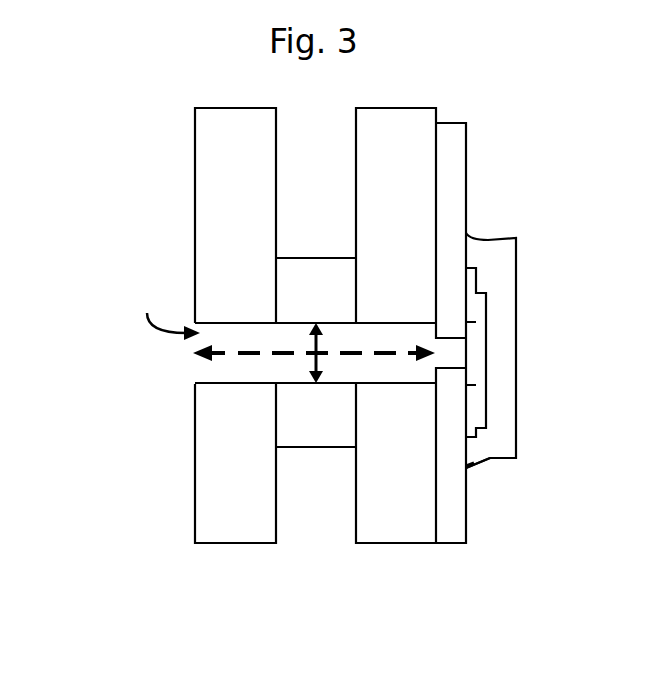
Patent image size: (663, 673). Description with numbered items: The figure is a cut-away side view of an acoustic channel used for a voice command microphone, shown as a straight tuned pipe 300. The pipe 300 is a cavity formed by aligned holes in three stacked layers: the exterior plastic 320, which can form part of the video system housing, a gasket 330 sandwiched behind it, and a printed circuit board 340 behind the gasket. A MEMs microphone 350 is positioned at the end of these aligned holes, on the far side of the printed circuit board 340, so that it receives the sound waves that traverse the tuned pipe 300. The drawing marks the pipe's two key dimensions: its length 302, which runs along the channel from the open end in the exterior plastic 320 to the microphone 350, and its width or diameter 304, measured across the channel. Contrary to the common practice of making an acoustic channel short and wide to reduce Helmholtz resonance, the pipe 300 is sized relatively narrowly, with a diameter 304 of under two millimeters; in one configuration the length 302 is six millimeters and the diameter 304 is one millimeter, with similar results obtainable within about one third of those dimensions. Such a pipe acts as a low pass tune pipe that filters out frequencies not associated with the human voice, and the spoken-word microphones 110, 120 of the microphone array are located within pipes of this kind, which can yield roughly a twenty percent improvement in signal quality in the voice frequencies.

The spoken-word microphone 110 is at (466, 197).
The spoken-word microphone 120 is at (466, 197).
The straight tuned pipe 300 is at (162, 316).
The length 302 is at (190, 353).
The diameter 304 is at (310, 363).
The exterior plastic 320 is at (240, 543).
The gasket 330 is at (333, 447).
The printed circuit board 340 is at (389, 543).
The MEMs microphone 350 is at (467, 487).